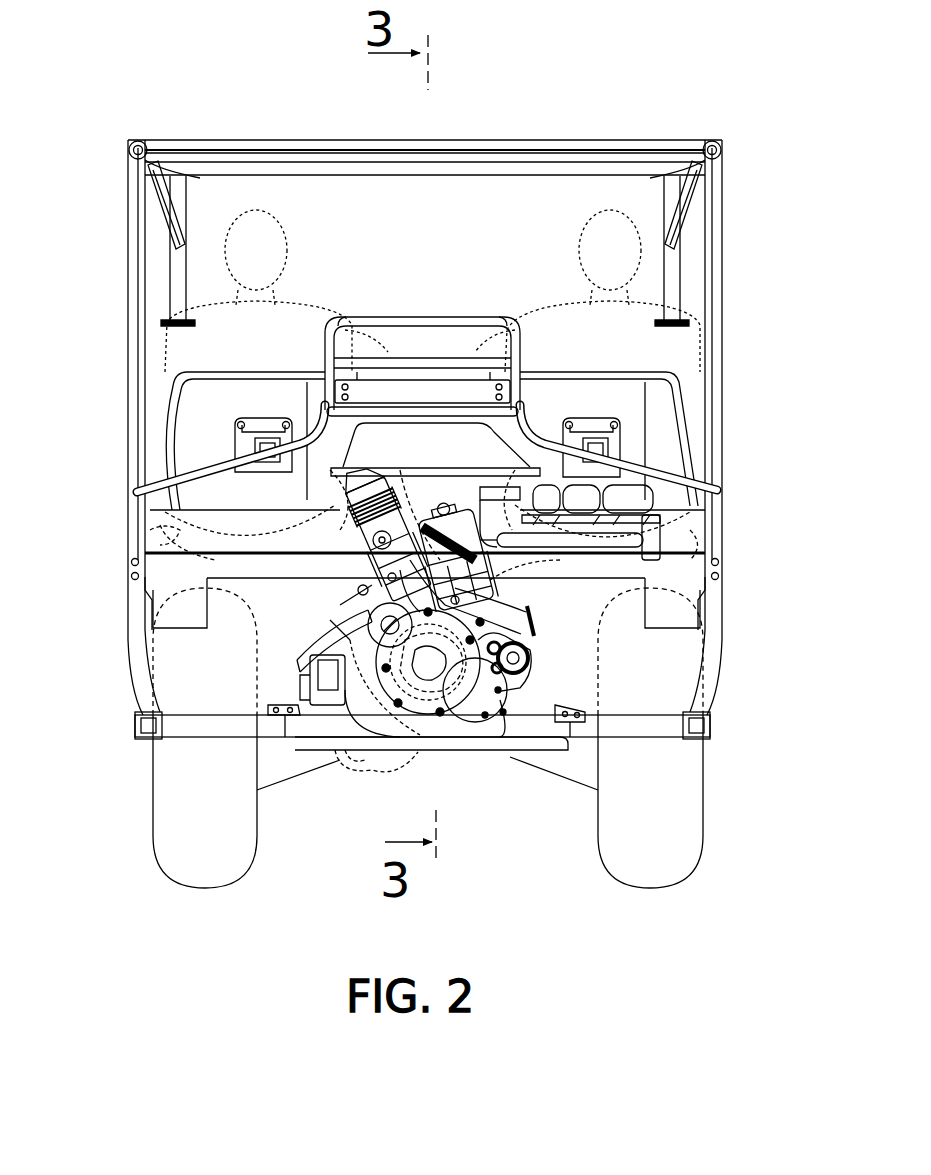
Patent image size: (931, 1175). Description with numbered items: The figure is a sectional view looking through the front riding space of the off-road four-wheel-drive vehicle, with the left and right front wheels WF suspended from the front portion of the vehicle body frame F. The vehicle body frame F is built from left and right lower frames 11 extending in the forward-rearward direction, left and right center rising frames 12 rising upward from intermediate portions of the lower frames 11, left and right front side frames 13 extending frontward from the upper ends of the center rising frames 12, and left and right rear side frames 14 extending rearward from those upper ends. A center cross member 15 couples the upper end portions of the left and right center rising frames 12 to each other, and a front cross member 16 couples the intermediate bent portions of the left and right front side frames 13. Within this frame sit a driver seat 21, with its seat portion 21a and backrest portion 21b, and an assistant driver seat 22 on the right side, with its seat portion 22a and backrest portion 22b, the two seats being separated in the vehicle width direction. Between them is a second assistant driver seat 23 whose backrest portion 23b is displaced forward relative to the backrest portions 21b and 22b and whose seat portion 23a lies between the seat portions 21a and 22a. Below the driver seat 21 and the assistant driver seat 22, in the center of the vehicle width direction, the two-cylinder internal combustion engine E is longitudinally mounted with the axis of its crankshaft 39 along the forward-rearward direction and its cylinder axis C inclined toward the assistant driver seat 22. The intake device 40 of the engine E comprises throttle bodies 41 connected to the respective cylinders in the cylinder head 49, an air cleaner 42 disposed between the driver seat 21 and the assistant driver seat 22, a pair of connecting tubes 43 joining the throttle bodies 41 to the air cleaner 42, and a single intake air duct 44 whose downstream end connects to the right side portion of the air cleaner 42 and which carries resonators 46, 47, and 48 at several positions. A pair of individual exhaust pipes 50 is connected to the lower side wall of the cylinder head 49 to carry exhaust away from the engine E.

The lower frame 11 is at (712, 727).
The center rising frame 12 is at (136, 303).
The front side frame 13 is at (182, 212).
The rear side frame 14 is at (128, 151).
The center cross member 15 is at (441, 150).
The front cross member 16 is at (366, 170).
The driver seat 21 is at (200, 441).
The seat portion 21a is at (165, 545).
The backrest portion 21b is at (250, 390).
The assistant driver seat 22 is at (661, 391).
The seat portion 22a is at (680, 535).
The backrest portion 22b is at (640, 372).
The second assistant driver seat 23 is at (422, 375).
The seat portion 23a is at (462, 488).
The backrest portion 23b is at (388, 330).
The crankshaft 39 is at (395, 768).
The intake device 40 is at (575, 558).
The throttle body 41 is at (380, 555).
The air cleaner 42 is at (522, 438).
The connecting tube 43 is at (292, 456).
The intake air duct 44 is at (718, 572).
The resonator 46 is at (548, 490).
The resonator 47 is at (585, 490).
The resonator 48 is at (632, 490).
The cylinder head 49 is at (480, 566).
The individual exhaust pipe 50 is at (508, 612).
The cylinder axis C is at (400, 470).
The internal combustion engine E is at (397, 598).
The vehicle body frame F is at (732, 641).
The front wheel WF is at (175, 842).